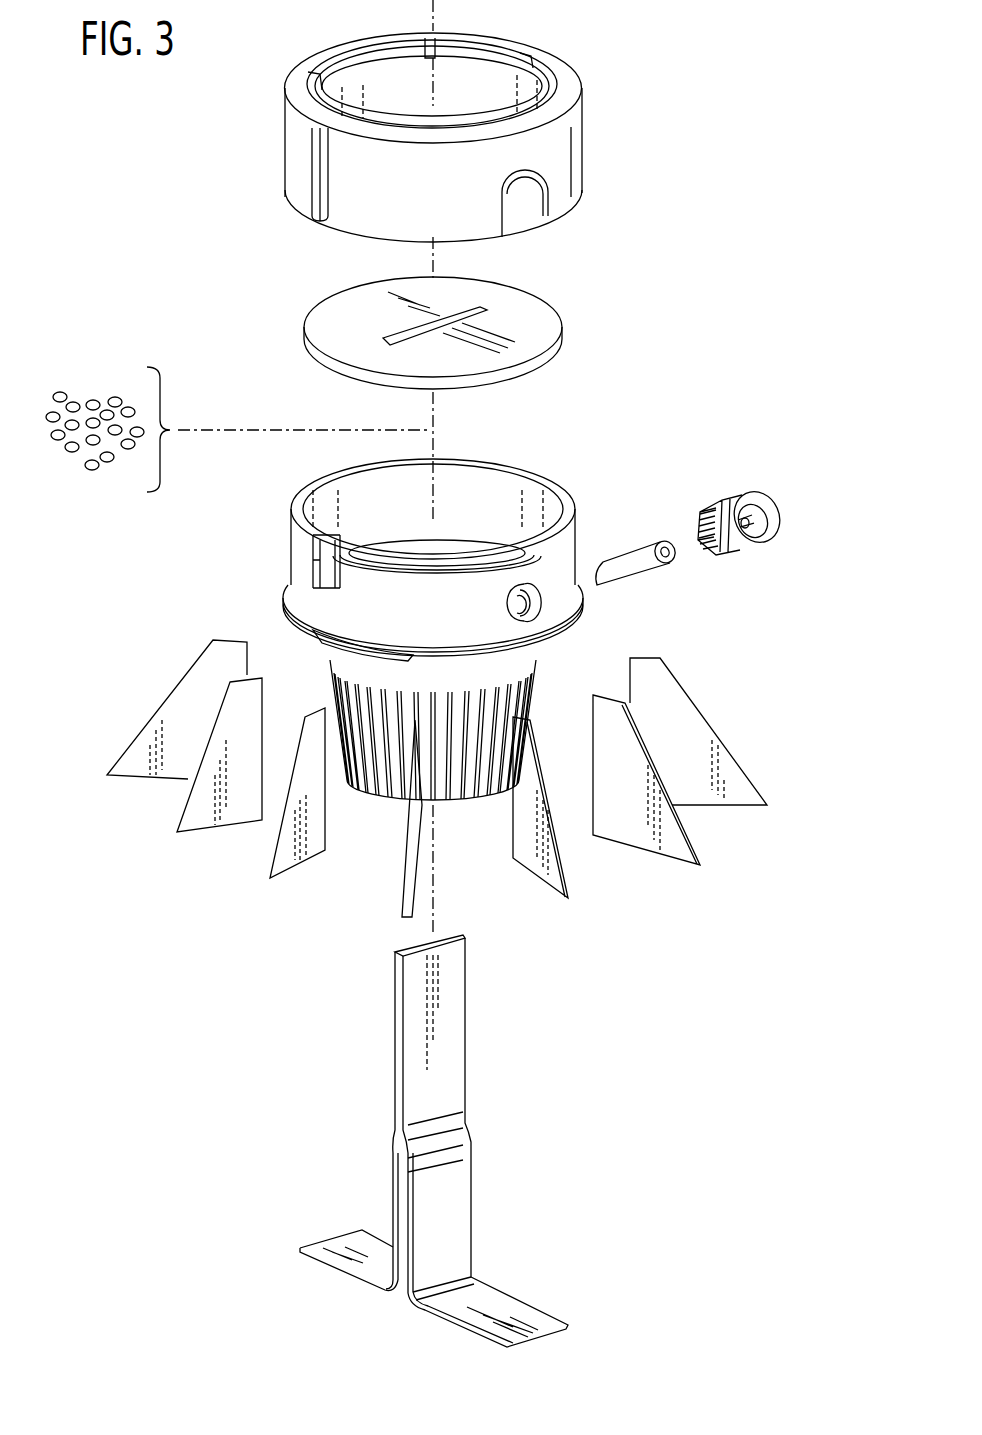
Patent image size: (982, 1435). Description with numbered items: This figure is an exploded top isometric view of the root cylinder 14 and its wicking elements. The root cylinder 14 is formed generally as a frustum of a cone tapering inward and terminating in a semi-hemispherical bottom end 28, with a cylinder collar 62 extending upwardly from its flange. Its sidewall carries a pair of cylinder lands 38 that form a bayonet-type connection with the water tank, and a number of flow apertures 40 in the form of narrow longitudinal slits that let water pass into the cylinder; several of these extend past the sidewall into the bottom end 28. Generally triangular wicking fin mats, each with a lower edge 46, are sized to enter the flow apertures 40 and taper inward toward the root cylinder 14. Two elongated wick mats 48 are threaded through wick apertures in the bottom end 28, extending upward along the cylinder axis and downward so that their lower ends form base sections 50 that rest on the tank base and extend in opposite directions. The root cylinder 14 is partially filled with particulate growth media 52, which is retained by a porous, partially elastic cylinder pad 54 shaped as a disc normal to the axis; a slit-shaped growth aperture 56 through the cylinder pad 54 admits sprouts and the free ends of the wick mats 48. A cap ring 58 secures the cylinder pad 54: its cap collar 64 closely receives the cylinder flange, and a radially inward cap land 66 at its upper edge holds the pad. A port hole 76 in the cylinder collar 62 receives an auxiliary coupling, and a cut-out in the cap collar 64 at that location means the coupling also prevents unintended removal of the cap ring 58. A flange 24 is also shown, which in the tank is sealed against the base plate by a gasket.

The root cylinder 14 is at (523, 655).
The peripheral flange 24 is at (775, 510).
The bottom end 28 is at (632, 568).
The cylinder lands 38 is at (357, 650).
The flow apertures 40 is at (447, 717).
The lower edge 46 is at (240, 827).
The wick mat 48 is at (392, 1195).
The base sections 50 is at (352, 1240).
The particulate growth media 52 is at (115, 402).
The cylinder pad 54 is at (342, 317).
The growth aperture 56 is at (463, 312).
The cap ring 58 is at (283, 145).
The cylinder collar 62 is at (477, 487).
The cap collar 64 is at (557, 148).
The cap land 66 is at (567, 82).
The port hole 76 is at (508, 603).